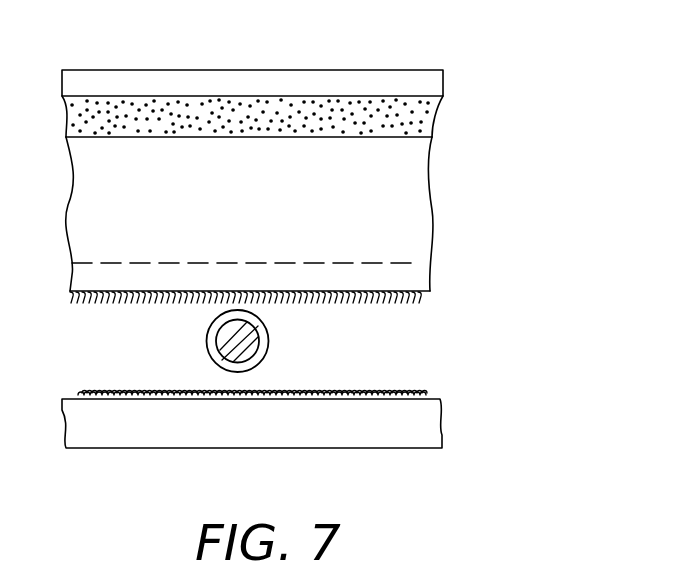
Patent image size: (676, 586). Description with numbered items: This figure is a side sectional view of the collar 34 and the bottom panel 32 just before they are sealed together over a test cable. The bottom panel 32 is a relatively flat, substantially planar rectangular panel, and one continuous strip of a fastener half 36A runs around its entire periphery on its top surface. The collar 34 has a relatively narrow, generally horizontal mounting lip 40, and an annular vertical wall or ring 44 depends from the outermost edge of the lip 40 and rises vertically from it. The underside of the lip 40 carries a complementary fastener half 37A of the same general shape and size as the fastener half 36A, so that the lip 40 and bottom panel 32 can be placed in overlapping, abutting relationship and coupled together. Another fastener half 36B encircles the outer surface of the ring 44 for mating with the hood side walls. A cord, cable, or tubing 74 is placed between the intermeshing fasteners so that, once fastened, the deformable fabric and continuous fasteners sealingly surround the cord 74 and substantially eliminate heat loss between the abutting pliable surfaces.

The ring 44 is at (420, 70).
The fastener half 36B is at (165, 100).
The collar 34 is at (412, 172).
The mounting lip 40 is at (360, 263).
The complementary fastener half 37A is at (395, 300).
The cables, cords, and/or tubing 74 is at (265, 353).
The fastener half 36A is at (420, 397).
The bottom panel 32 is at (107, 452).